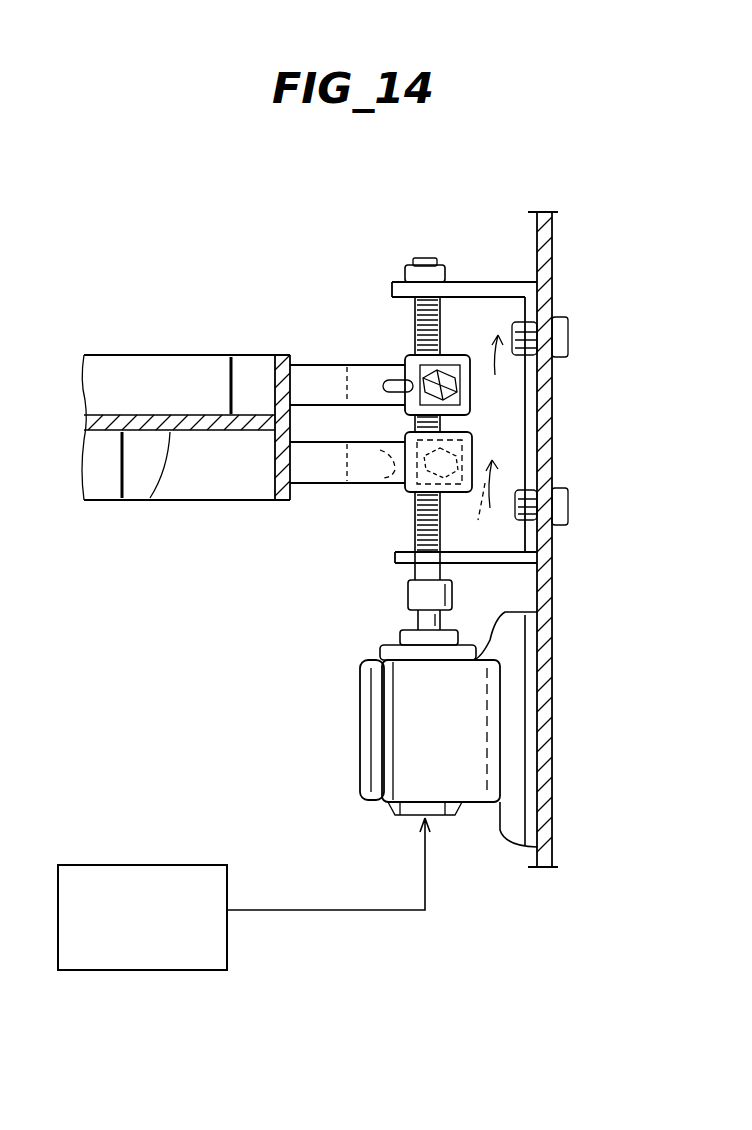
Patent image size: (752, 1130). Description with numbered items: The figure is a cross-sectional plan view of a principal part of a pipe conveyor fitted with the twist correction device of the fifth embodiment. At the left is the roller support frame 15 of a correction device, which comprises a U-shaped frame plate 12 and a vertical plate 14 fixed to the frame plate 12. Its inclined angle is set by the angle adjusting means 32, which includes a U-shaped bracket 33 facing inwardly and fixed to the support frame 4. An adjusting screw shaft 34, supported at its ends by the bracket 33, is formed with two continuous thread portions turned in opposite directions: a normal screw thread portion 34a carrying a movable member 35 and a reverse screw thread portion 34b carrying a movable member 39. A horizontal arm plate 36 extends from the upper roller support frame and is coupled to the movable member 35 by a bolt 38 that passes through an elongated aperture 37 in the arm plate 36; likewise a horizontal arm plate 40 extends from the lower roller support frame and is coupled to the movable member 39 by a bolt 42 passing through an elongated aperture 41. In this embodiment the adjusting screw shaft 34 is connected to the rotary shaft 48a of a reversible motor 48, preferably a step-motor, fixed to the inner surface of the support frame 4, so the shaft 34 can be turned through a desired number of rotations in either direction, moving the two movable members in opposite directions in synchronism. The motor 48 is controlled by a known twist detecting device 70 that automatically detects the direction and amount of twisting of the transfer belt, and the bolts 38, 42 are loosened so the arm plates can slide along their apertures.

The support frame 4 is at (575, 310).
The U-shaped frame plate 12 is at (186, 401).
The vertical plate 14 is at (150, 498).
The roller support frame 15 is at (115, 356).
The angle adjusting means 32 is at (290, 318).
The U-shaped bracket 33 is at (486, 282).
The adjusting screw shaft 34 is at (415, 505).
The normal screw thread portion 34a is at (415, 332).
The reverse screw thread portion 34b is at (417, 520).
The movable member 35 is at (475, 396).
The horizontal arm plate 36 is at (315, 365).
The elongated aperture 37 is at (388, 386).
The bolt 38 is at (450, 372).
The movable member 39 is at (475, 444).
The horizontal arm plate 40 is at (310, 488).
The elongated aperture 41 is at (380, 490).
The bolt 42 is at (479, 440).
The reversible motor 48 is at (362, 742).
The rotary shaft 48a is at (418, 618).
The twist detecting device 70 is at (102, 865).